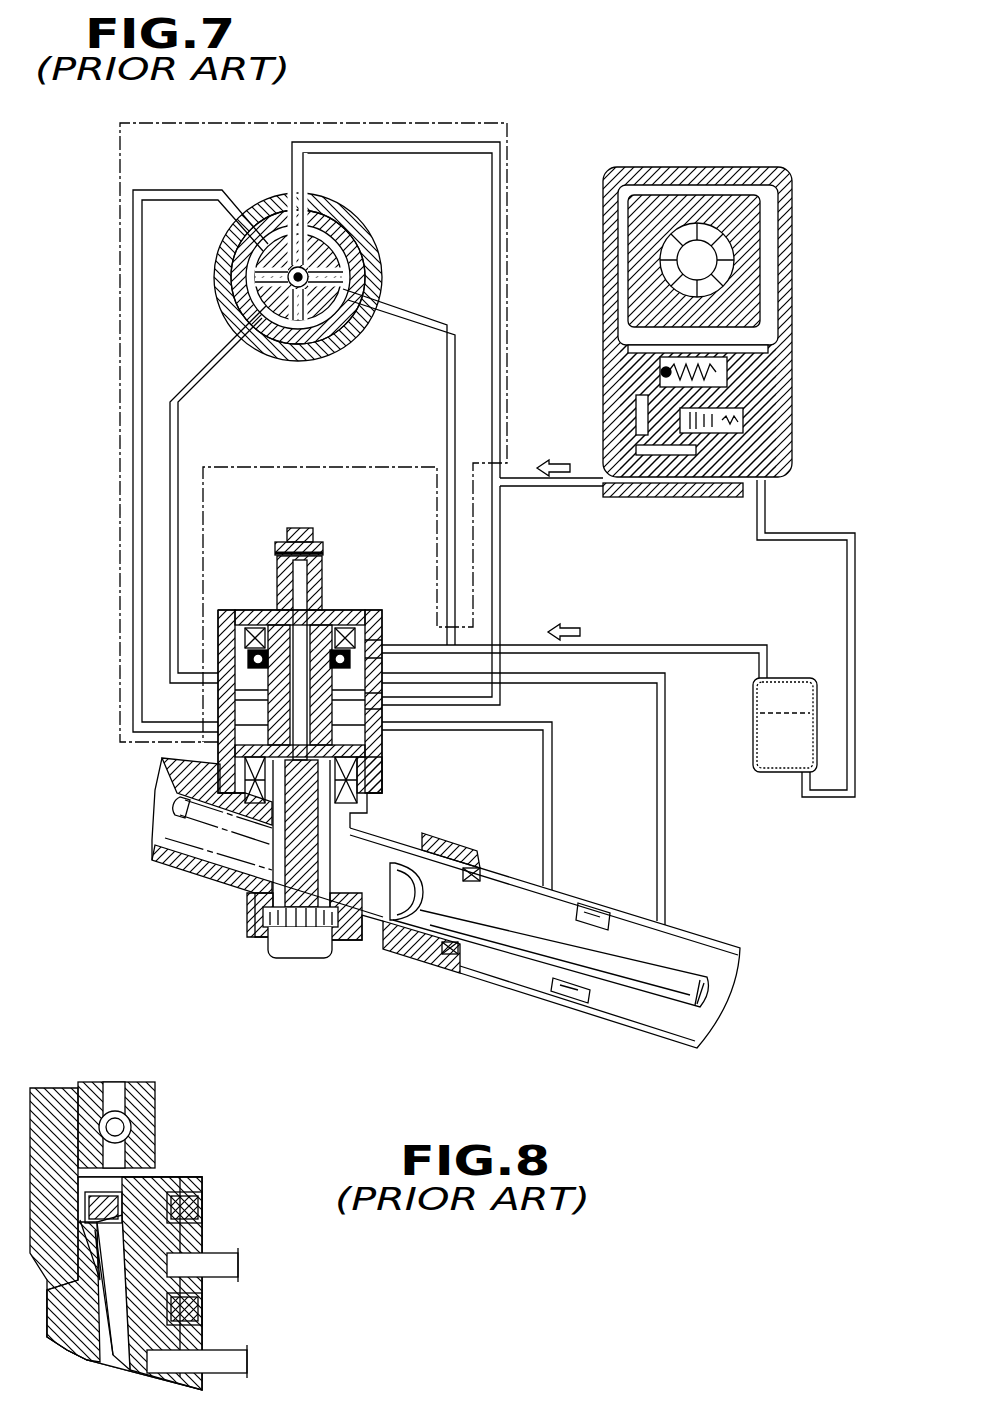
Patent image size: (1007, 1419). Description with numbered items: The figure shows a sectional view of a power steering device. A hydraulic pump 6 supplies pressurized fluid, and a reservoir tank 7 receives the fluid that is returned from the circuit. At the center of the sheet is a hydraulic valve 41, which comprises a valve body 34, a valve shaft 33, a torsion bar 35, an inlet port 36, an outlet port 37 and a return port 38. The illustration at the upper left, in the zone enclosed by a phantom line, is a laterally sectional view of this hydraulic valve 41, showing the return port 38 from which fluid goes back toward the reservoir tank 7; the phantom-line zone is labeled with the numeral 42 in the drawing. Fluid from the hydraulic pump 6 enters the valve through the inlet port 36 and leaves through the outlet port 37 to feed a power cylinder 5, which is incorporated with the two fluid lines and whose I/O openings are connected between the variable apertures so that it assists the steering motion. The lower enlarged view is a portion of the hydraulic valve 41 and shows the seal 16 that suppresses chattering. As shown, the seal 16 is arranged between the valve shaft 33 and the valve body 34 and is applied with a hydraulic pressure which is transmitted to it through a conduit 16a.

In FIG. 7, the steering unit 42 is at (320, 123).
In FIG. 7, the hydraulic pump 6 is at (656, 151).
In FIG. 7, the return port 38 is at (345, 272).
In FIG. 7, the reservoir tank 7 is at (753, 746).
In FIG. 7, the hydraulic valve 41 is at (300, 617).
In FIG. 7, the valve shaft 33 is at (323, 545).
In FIG. 8, the valve shaft 33 is at (57, 1090).
In FIG. 7, the torsion bar 35 is at (280, 573).
In FIG. 7, the outlet port 37 is at (380, 648).
In FIG. 7, the inlet port 36 is at (385, 699).
In FIG. 8, the inlet port 36 is at (213, 1357).
In FIG. 7, the valve body 34 is at (367, 752).
In FIG. 8, the valve body 34 is at (185, 1240).
In FIG. 7, the power cylinder 5 is at (505, 985).
In FIG. 8, the seal 16 is at (120, 1222).
In FIG. 8, the conduit 16a is at (165, 1200).